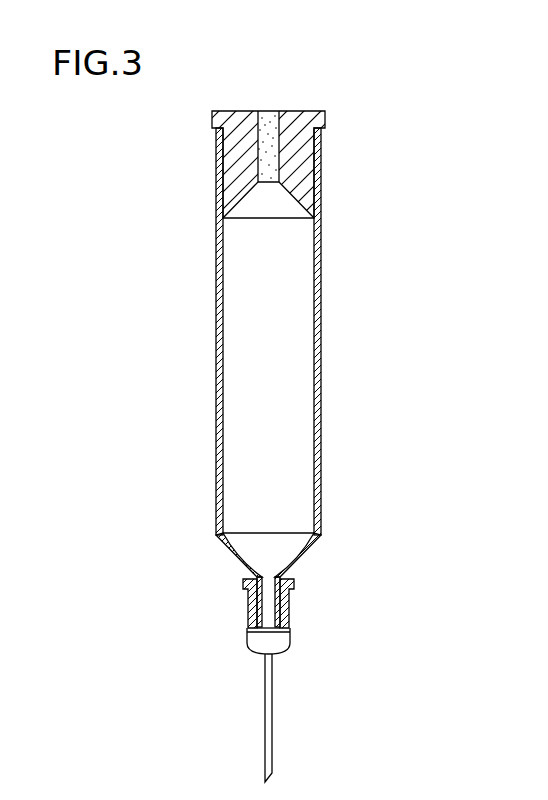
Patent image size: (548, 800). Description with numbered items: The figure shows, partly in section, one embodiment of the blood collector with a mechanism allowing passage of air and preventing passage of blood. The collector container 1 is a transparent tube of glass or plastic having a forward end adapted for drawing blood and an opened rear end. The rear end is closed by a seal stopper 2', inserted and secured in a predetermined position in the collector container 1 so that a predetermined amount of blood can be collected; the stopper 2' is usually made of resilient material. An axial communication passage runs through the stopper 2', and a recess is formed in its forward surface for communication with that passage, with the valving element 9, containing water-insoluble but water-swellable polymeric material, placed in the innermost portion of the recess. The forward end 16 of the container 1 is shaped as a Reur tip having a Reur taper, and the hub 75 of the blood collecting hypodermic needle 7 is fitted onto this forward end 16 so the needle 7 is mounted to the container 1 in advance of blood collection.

The collector container 1 is at (322, 316).
The seal stopper 2' is at (276, 163).
The valving element 9 is at (266, 125).
The forward end 16 is at (285, 575).
The hub 75 is at (290, 620).
The hypodermic needle 7 is at (272, 710).